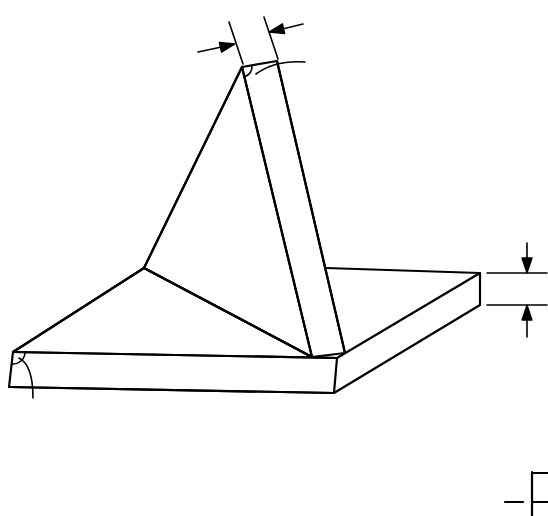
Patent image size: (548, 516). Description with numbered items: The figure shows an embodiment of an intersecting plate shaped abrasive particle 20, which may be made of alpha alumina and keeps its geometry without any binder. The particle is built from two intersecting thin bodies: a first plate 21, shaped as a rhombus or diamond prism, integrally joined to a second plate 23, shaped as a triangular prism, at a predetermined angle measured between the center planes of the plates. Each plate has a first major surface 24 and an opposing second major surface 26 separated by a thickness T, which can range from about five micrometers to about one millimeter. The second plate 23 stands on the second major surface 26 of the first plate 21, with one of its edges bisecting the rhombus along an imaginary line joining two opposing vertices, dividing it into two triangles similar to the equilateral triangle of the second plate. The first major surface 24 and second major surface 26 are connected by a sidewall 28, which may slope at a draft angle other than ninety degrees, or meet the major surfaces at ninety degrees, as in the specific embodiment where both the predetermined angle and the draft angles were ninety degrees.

The shaped abrasive particle 20 is at (110, 84).
The first plate 21 is at (383, 381).
The second plate 23 is at (314, 156).
The first major surface 24 is at (288, 105).
The second major surface 26 is at (224, 240).
The sidewall 28 is at (417, 327).